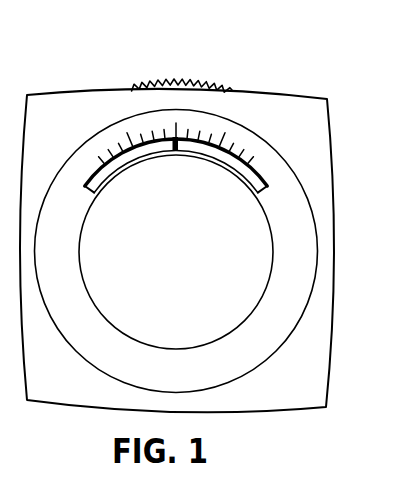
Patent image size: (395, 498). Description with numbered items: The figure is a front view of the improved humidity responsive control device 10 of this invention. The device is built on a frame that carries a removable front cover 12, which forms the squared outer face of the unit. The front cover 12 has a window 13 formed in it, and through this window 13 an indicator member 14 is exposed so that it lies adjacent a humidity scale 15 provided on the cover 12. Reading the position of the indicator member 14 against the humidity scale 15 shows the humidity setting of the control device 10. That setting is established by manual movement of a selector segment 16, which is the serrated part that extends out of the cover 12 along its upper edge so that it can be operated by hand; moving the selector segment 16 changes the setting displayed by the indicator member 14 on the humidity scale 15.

The humidity responsive control device 10 is at (277, 65).
The removable front cover 12 is at (310, 145).
The window 13 is at (249, 160).
The indicator member 14 is at (171, 143).
The humidity scale 15 is at (109, 146).
The selector segment 16 is at (179, 78).